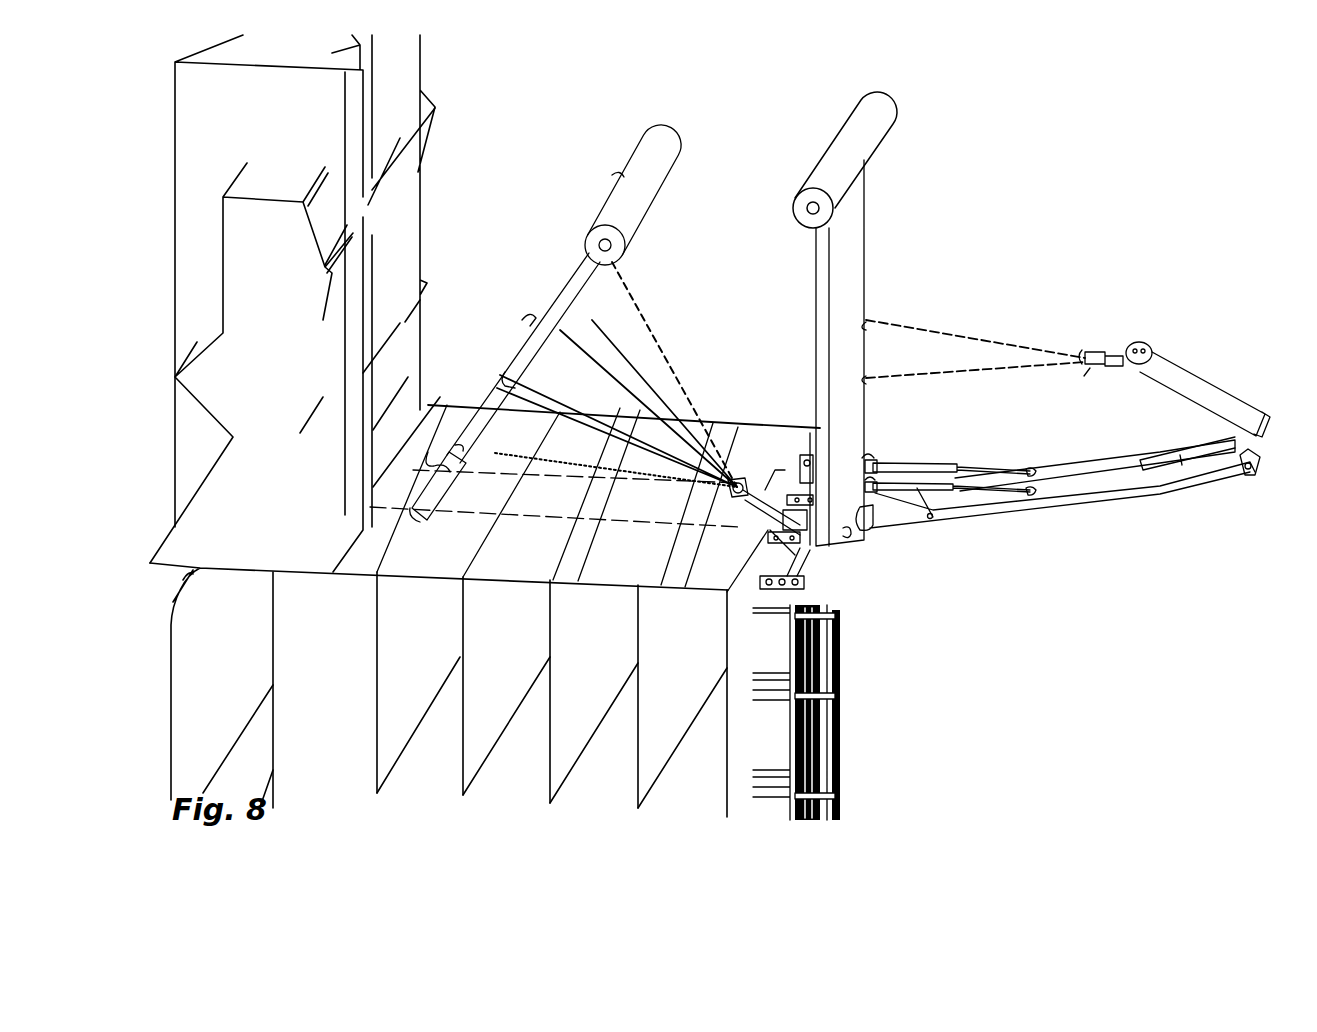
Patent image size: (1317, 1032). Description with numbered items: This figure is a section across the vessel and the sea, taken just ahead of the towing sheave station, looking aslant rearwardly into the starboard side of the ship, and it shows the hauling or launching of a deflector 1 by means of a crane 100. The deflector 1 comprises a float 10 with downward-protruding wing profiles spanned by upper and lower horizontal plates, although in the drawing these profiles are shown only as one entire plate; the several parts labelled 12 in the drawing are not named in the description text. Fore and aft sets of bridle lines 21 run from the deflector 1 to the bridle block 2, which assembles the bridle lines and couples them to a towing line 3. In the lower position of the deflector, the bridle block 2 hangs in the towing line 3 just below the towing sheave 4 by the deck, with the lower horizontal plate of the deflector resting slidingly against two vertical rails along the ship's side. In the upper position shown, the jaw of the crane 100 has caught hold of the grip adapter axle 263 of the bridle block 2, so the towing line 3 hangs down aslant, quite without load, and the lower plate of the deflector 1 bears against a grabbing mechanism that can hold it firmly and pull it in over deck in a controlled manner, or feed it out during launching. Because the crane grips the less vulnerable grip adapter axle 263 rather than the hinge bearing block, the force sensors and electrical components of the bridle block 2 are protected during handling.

The deflector 1 is at (540, 241).
The bridle block 2 is at (700, 525).
The towing line 3 is at (1098, 395).
The towing sheave 4 is at (735, 528).
The float 10 is at (640, 172).
The mounting bracket 12 is at (525, 320).
The bridle lines 21 is at (688, 343).
The crane 100 is at (1227, 353).
The grip adapter axle 263 is at (800, 490).